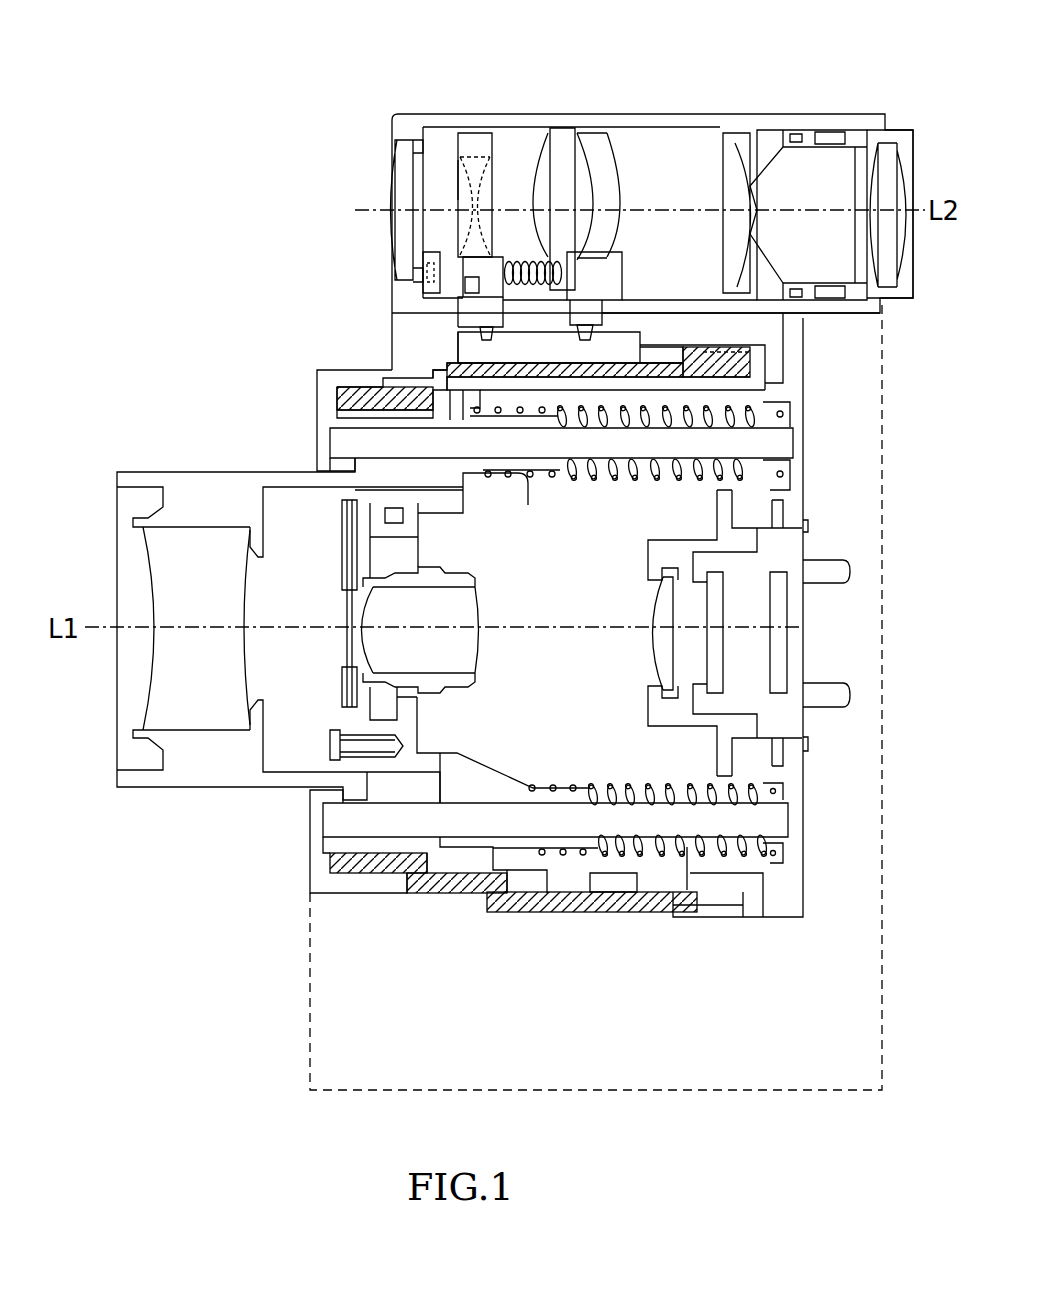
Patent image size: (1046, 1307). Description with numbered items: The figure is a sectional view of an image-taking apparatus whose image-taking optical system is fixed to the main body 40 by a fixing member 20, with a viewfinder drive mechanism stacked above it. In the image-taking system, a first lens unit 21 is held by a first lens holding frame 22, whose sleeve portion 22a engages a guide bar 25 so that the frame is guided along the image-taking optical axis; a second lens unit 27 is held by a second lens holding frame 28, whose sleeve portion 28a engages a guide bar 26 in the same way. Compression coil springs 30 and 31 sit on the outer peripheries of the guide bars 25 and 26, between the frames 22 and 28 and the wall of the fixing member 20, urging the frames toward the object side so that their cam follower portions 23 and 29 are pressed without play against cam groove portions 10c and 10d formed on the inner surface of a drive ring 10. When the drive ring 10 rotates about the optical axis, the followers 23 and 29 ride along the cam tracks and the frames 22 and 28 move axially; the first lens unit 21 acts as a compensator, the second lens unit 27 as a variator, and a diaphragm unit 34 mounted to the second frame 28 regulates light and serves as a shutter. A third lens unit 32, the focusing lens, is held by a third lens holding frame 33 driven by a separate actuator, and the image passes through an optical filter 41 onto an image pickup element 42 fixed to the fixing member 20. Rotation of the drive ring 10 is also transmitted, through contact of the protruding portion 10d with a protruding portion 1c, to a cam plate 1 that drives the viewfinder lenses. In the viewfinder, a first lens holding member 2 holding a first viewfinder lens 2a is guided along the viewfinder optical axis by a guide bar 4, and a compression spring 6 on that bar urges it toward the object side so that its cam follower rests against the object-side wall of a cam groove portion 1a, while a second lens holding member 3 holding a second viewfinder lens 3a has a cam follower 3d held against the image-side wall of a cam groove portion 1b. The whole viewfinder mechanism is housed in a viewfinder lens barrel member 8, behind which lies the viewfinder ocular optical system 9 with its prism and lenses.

The cam plate 1 is at (628, 340).
The cam groove portion 1a is at (490, 345).
The cam groove portion 1b is at (588, 340).
The protruding portion 1c is at (453, 333).
The first lens holding member 2 is at (477, 137).
The first viewfinder lens 2a is at (458, 180).
The second lens holding member 3 is at (570, 112).
The second viewfinder lens 3a is at (593, 128).
The cam follower 3d is at (593, 310).
The guide bar 4 is at (458, 262).
The compression spring 6 is at (513, 260).
The viewfinder lens barrel member 8 is at (669, 113).
The viewfinder ocular optical system 9 is at (920, 105).
The drive ring 10 is at (453, 345).
The cam groove portion 10c is at (430, 385).
The cam groove portion 10d is at (455, 338).
The fixing member 20 is at (340, 893).
The first lens unit 21 is at (172, 722).
The first lens holding frame 22 is at (200, 788).
The sleeve portion 22a is at (548, 480).
The cam follower portion 23 is at (458, 390).
The guide bar 25 is at (333, 442).
The guide bar 26 is at (385, 840).
The second lens unit 27 is at (473, 647).
The second lens holding frame 28 is at (490, 770).
The sleeve portion 28a is at (560, 782).
The cam follower portion 29 is at (515, 880).
The compression coil spring 30 is at (637, 478).
The compression coil spring 31 is at (670, 788).
The third lens unit 32 is at (657, 600).
The third lens holding frame 33 is at (650, 688).
The diaphragm unit 34 is at (337, 692).
The main body 40 is at (560, 1092).
The optical filter 41 is at (718, 673).
The image pickup element 42 is at (781, 647).